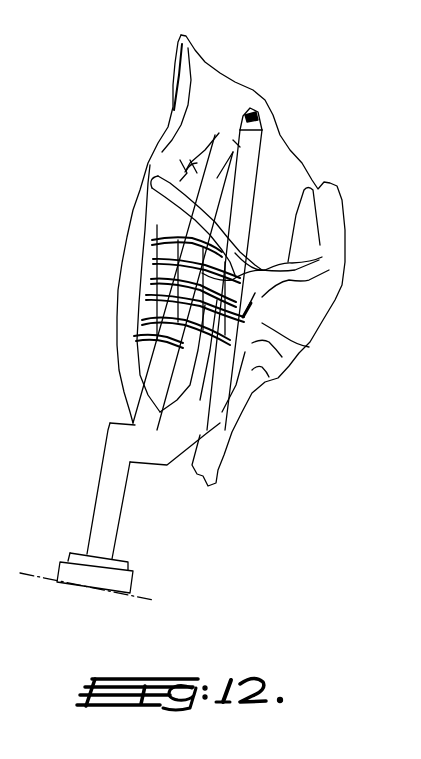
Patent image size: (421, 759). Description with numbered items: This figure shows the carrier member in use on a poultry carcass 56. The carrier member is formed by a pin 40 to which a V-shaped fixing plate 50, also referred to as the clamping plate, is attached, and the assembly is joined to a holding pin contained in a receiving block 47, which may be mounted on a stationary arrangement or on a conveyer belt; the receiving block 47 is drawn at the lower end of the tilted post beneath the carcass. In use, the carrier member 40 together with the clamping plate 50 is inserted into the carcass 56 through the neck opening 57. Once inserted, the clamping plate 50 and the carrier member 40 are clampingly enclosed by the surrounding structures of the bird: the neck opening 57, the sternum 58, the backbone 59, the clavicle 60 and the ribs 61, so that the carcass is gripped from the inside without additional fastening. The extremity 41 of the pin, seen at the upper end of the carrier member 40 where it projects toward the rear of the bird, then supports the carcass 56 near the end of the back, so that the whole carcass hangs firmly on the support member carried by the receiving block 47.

The pin 40 is at (252, 190).
The extremity 41 is at (258, 123).
The receiving block 47 is at (131, 579).
The V-shaped fixing plate 50 is at (153, 304).
The carcass 56 is at (132, 213).
The neck opening 57 is at (135, 423).
The sternum 58 is at (303, 343).
The backbone 59 is at (140, 362).
The clavicle 60 is at (147, 333).
The ribs 61 is at (243, 310).